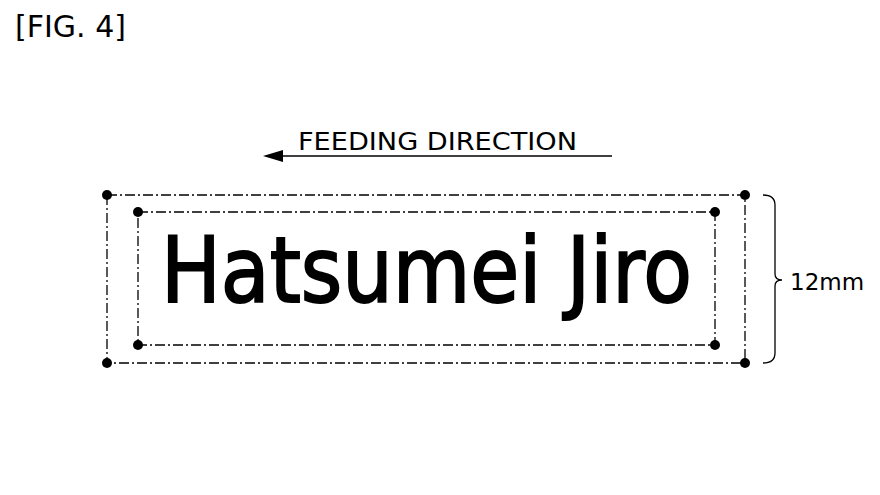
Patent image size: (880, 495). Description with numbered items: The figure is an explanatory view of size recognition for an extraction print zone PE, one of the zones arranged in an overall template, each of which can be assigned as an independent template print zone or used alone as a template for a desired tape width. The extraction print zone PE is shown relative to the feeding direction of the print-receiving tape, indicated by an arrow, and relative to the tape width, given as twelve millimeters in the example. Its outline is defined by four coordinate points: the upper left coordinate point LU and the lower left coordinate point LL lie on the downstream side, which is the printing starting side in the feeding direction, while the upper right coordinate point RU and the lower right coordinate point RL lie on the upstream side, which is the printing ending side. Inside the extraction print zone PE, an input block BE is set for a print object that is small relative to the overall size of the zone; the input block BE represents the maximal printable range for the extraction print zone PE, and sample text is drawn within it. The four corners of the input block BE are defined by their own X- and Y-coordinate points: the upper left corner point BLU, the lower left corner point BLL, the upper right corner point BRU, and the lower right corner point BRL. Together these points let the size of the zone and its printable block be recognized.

The extraction print zone PE is at (493, 363).
The input block BE is at (418, 345).
The upper left coordinate point LU is at (107, 195).
The upper left corner point of input block BLU is at (138, 212).
The upper right corner point of input block BRU is at (715, 212).
The upper right coordinate point RU is at (745, 195).
The lower left coordinate point LL is at (107, 363).
The lower left corner point of input block BLL is at (138, 345).
The lower right corner point of input block BRL is at (715, 345).
The lower right coordinate point RL is at (745, 363).